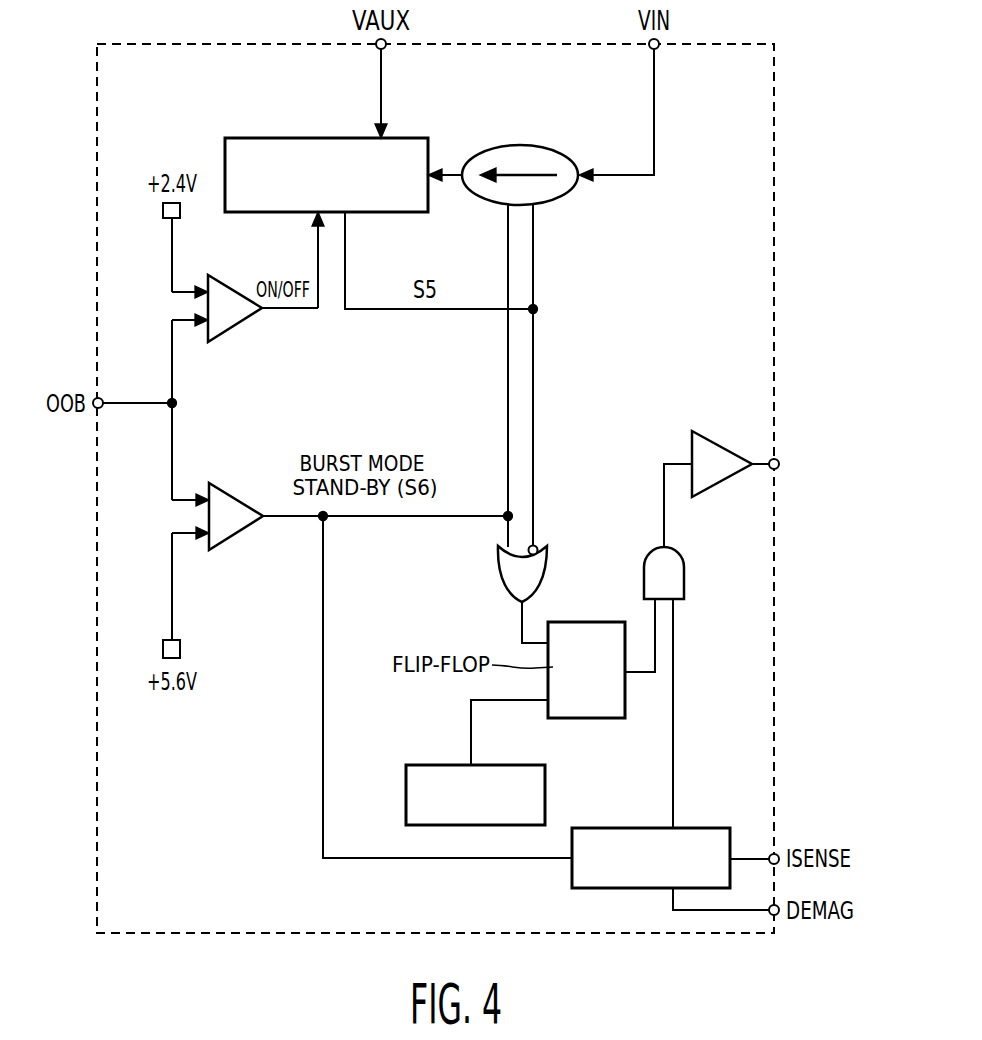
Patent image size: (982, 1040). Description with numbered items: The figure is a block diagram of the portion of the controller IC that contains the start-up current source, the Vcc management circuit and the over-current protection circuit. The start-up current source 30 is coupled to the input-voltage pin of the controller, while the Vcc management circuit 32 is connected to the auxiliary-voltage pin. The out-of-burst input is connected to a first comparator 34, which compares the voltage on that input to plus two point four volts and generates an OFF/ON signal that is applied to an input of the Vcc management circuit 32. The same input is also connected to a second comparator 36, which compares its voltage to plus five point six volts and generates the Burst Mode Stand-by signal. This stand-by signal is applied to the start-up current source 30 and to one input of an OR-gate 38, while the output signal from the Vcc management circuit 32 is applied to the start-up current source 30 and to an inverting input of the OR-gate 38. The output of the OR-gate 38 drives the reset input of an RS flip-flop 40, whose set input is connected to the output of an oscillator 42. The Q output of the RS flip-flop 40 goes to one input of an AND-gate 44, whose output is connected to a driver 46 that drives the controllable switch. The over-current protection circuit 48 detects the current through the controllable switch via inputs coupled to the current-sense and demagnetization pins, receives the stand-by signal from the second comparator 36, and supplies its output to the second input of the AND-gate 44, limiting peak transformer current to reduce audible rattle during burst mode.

The start-up current source 30 is at (556, 194).
The Vcc management circuit 32 is at (253, 147).
The first comparator 34 is at (237, 318).
The second comparator 36 is at (247, 520).
The OR-gate 38 is at (512, 573).
The RS flip-flop 40 is at (590, 712).
The oscillator 42 is at (410, 777).
The AND-gate 44 is at (680, 587).
The driver 46 is at (710, 448).
The over-current protection circuit 48 is at (573, 876).